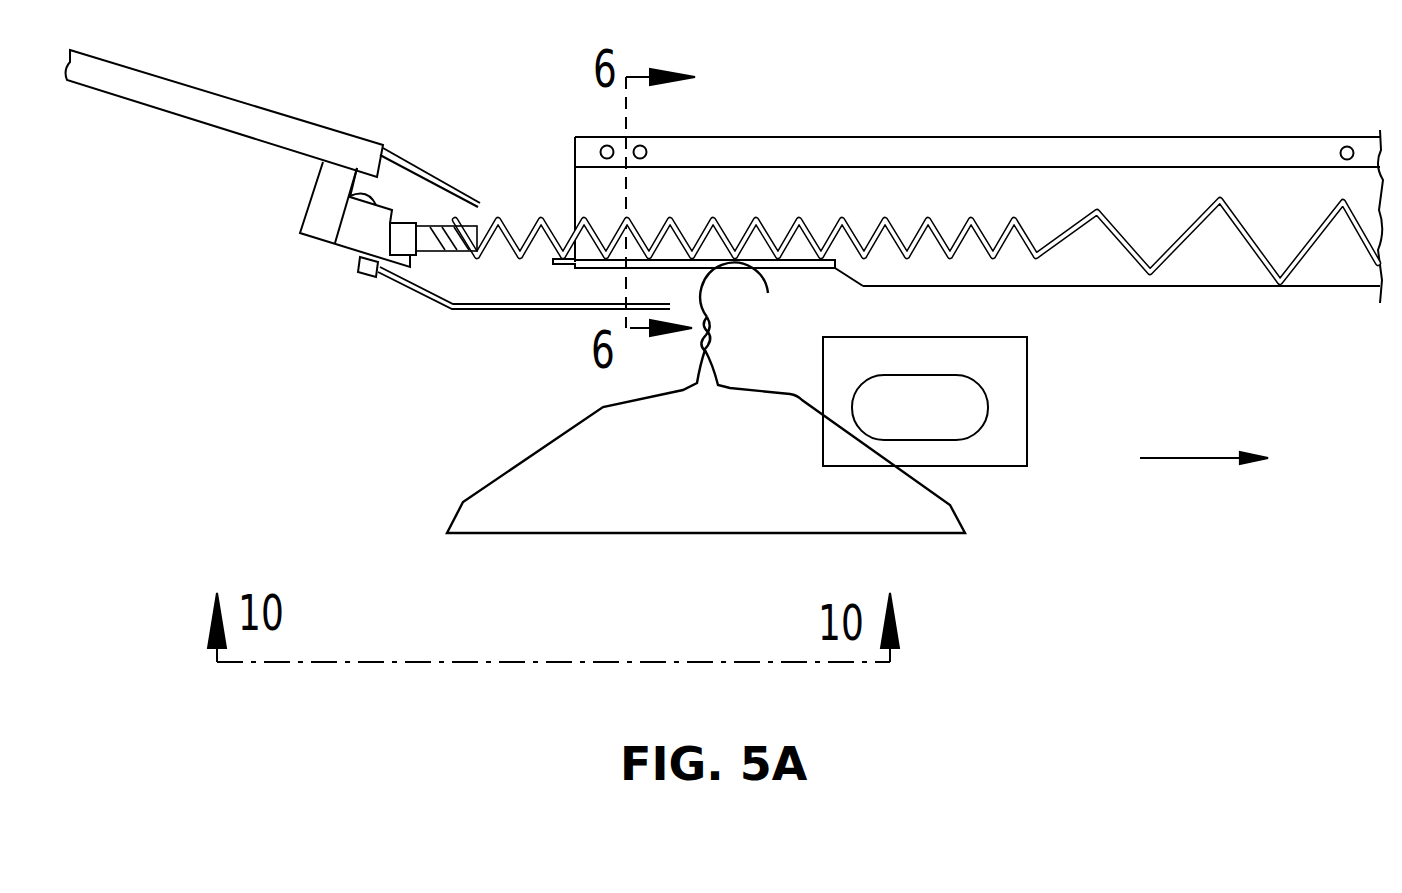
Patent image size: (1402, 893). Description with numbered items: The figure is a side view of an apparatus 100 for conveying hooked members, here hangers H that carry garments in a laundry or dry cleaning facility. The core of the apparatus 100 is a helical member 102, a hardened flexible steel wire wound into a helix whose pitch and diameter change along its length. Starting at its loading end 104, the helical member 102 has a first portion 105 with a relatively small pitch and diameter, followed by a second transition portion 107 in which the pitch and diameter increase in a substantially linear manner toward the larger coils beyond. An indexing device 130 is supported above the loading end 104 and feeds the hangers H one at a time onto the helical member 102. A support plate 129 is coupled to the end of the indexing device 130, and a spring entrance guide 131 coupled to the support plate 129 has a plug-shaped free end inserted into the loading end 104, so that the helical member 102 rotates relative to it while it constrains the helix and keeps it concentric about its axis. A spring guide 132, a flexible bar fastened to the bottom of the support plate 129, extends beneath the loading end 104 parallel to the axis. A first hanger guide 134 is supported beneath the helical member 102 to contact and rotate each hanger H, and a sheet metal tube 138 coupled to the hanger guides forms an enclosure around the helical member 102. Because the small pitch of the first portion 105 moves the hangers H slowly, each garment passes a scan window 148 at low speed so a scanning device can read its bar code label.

The apparatus 100 is at (1342, 112).
The helical member 102 is at (1363, 250).
The loading end 104 is at (437, 227).
The first portion 105 is at (800, 220).
The second transition portion 107 is at (1217, 197).
The support plate 129 is at (327, 177).
The indexing device 130 is at (147, 73).
The spring entrance guide 131 is at (392, 234).
The spring guide 132 is at (483, 311).
The first hanger guide 134 is at (805, 268).
The sheet metal tube 138 is at (787, 137).
The scan window 148 is at (1040, 367).
The hanger H is at (690, 535).